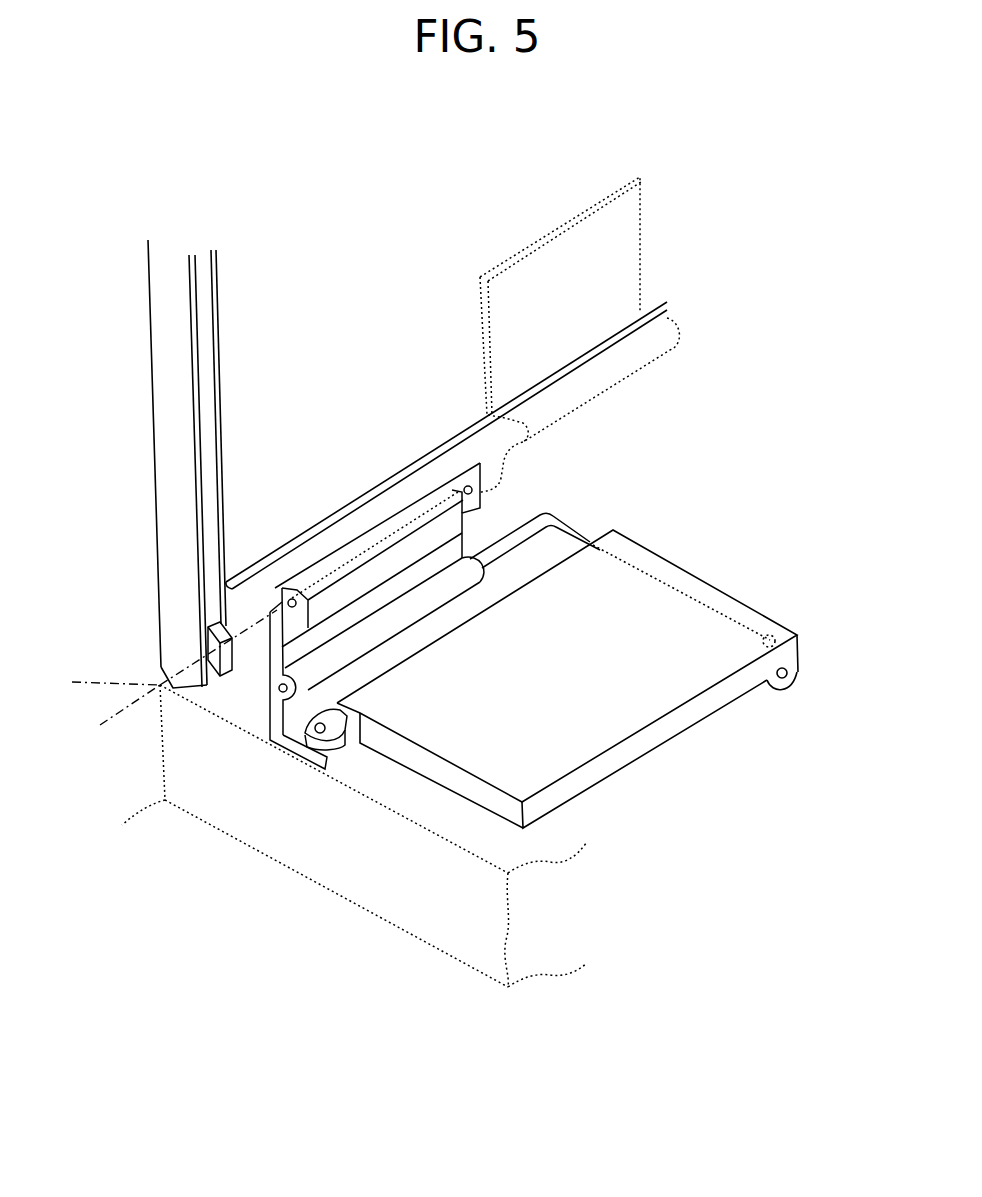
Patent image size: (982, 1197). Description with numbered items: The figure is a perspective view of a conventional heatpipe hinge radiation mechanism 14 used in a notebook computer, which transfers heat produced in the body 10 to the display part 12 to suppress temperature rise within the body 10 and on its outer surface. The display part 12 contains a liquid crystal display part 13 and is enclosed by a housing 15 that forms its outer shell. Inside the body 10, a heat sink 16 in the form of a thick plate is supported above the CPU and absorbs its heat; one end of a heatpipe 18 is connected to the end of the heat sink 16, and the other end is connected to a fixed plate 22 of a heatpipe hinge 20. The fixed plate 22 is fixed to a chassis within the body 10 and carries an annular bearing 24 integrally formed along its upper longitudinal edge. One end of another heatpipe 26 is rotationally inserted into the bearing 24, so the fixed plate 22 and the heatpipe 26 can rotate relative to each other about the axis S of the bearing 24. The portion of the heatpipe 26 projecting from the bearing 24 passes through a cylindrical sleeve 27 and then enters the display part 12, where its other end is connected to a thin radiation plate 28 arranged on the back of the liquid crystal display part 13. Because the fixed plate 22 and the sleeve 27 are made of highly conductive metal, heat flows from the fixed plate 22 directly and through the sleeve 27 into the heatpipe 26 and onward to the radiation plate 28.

The body 10 is at (342, 836).
The display part 12 is at (158, 668).
The liquid crystal display part 13 is at (255, 348).
The heatpipe hinge radiation mechanism 14 is at (563, 453).
The housing 15 is at (155, 438).
The heat sink 16 is at (643, 747).
The heatpipe 18 is at (582, 522).
The heatpipe hinge 20 is at (262, 700).
The fixed plate 22 is at (385, 662).
The annular bearing 24 is at (287, 597).
The heatpipe 26 is at (470, 493).
The cylindrical sleeve 27 is at (385, 533).
The radiation plate 28 is at (625, 358).
The axis S is at (164, 667).